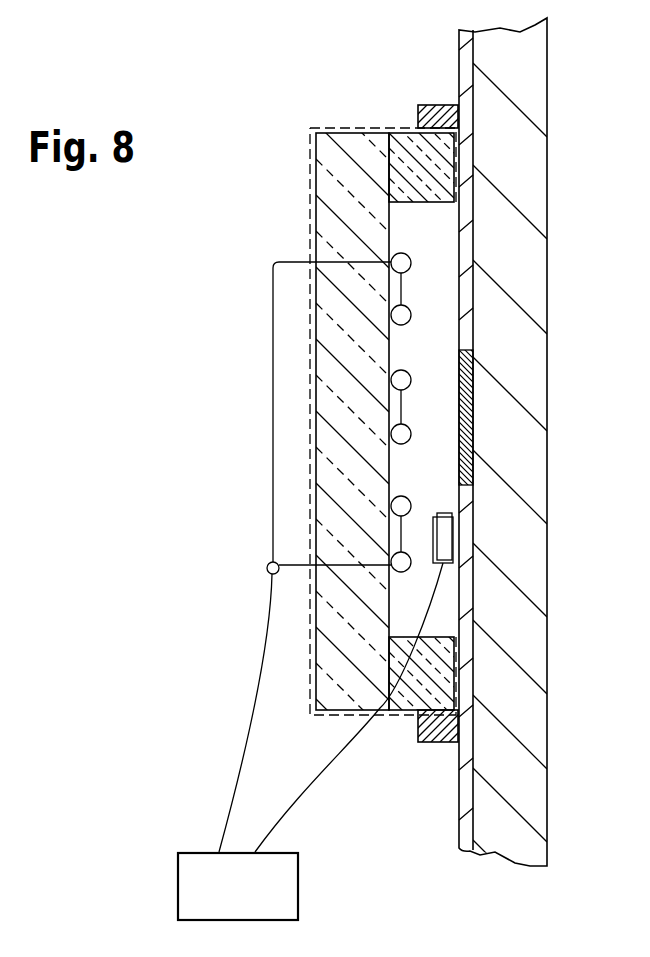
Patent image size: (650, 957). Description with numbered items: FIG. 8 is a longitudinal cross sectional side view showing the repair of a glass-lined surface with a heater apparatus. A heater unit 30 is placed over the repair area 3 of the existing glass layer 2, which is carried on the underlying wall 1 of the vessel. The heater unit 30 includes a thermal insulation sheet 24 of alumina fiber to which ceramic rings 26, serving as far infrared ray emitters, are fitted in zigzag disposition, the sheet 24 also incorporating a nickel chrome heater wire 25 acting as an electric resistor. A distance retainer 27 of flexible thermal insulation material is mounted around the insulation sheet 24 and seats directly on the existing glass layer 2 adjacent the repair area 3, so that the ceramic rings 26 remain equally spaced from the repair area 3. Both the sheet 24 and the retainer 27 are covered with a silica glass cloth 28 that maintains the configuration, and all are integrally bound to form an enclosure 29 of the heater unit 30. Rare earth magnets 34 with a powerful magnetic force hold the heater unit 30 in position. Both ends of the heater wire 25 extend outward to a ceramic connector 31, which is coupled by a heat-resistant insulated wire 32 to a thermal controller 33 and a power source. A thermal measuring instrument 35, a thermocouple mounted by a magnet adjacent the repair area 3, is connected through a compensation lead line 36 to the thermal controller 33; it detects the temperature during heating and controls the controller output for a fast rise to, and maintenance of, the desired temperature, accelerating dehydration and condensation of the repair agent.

The wall 1 is at (537, 90).
The existing glass layer 2 is at (465, 240).
The repair area 3 is at (398, 481).
The thermal insulation sheet 24 is at (335, 355).
The heater wire 25 is at (404, 407).
The ceramic rings 26 is at (405, 512).
The distance retainer 27 is at (402, 130).
The silica glass cloth 28 is at (310, 519).
The enclosure 29 is at (298, 250).
The heater unit 30 is at (319, 419).
The connector 31 is at (266, 573).
The heat-resistant insulated wire 32 is at (247, 737).
The thermal controller 33 is at (288, 884).
The rare earth magnets 34 is at (433, 105).
The thermal measuring instrument 35 is at (447, 543).
The compensation lead line 36 is at (312, 788).